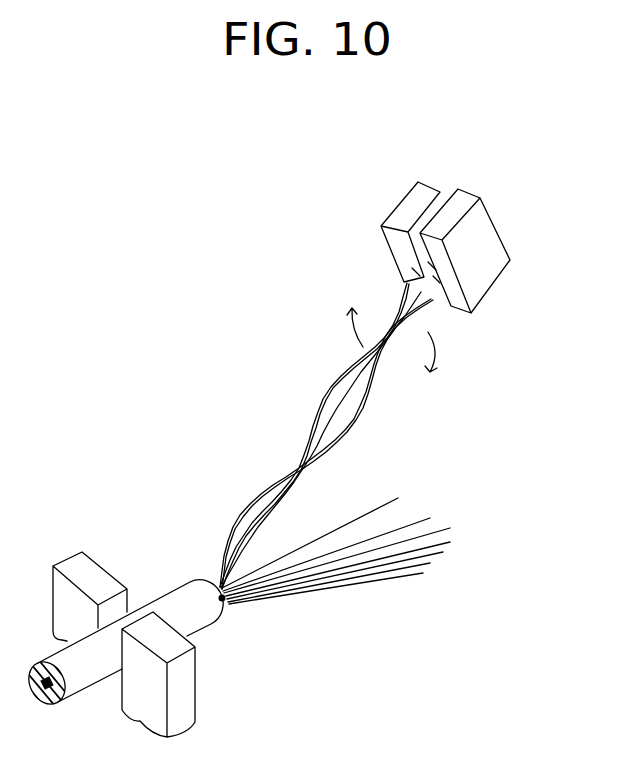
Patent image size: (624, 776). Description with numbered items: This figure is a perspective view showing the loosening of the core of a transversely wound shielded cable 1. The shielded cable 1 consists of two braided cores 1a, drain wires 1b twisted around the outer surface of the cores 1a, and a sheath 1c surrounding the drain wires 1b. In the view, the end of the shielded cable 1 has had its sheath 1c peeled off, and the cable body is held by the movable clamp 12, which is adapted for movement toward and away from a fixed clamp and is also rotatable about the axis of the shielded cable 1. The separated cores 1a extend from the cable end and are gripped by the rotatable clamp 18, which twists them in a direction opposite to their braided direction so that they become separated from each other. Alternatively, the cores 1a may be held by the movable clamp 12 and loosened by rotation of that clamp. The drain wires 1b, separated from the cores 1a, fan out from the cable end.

The shielded cable 1 is at (283, 436).
The cores 1a is at (360, 415).
The drain wires 1b is at (335, 548).
The sheath 1c is at (186, 335).
The movable clamp 12 is at (167, 633).
The rotatable clamp 18 is at (423, 191).